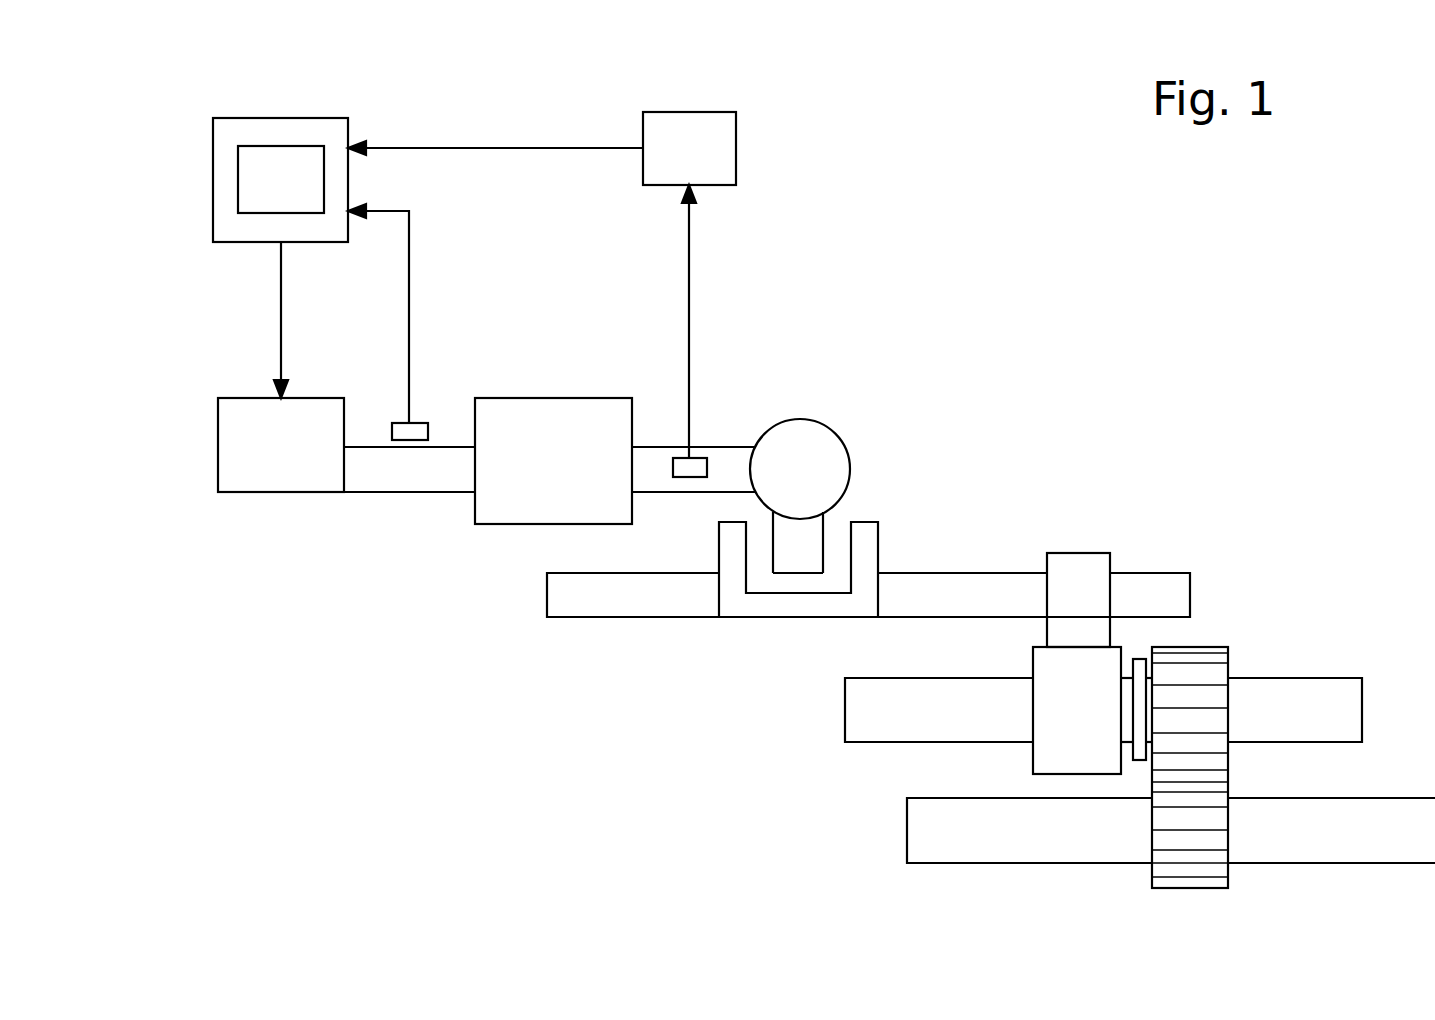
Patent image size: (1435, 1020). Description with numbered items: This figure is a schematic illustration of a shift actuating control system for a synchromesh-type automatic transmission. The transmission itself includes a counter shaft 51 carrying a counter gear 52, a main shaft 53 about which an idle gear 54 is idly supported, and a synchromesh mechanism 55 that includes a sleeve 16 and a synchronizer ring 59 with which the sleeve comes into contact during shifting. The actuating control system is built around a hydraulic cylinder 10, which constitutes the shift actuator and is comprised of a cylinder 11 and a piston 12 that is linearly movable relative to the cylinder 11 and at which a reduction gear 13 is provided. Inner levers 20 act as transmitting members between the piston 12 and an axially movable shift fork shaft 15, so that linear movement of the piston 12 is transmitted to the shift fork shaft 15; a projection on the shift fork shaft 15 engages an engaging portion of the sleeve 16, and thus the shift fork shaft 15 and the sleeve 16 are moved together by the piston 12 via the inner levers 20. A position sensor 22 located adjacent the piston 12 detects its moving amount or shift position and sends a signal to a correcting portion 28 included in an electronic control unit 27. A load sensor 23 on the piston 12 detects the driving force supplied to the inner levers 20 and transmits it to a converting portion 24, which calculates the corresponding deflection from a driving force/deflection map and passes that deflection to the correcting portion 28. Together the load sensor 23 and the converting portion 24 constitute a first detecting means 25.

The hydraulic cylinder 10 is at (306, 465).
The cylinder 11 is at (218, 457).
The piston 12 is at (408, 478).
The reduction gear 13 is at (576, 482).
The shift fork shaft 15 is at (740, 632).
The sleeve 16 is at (1045, 748).
The inner levers 20 is at (855, 426).
The position sensor 22 is at (420, 428).
The load sensor 23 is at (718, 430).
The converting portion 24 is at (712, 167).
The first detecting means 25 is at (757, 310).
The electronic control unit 27 is at (284, 112).
The correcting portion 28 is at (304, 203).
The counter shaft 51 is at (922, 832).
The counter gear 52 is at (1205, 848).
The main shaft 53 is at (860, 720).
The idle gear 54 is at (1200, 695).
The synchromesh mechanism 55 is at (1123, 530).
The synchronizer ring 59 is at (1140, 660).